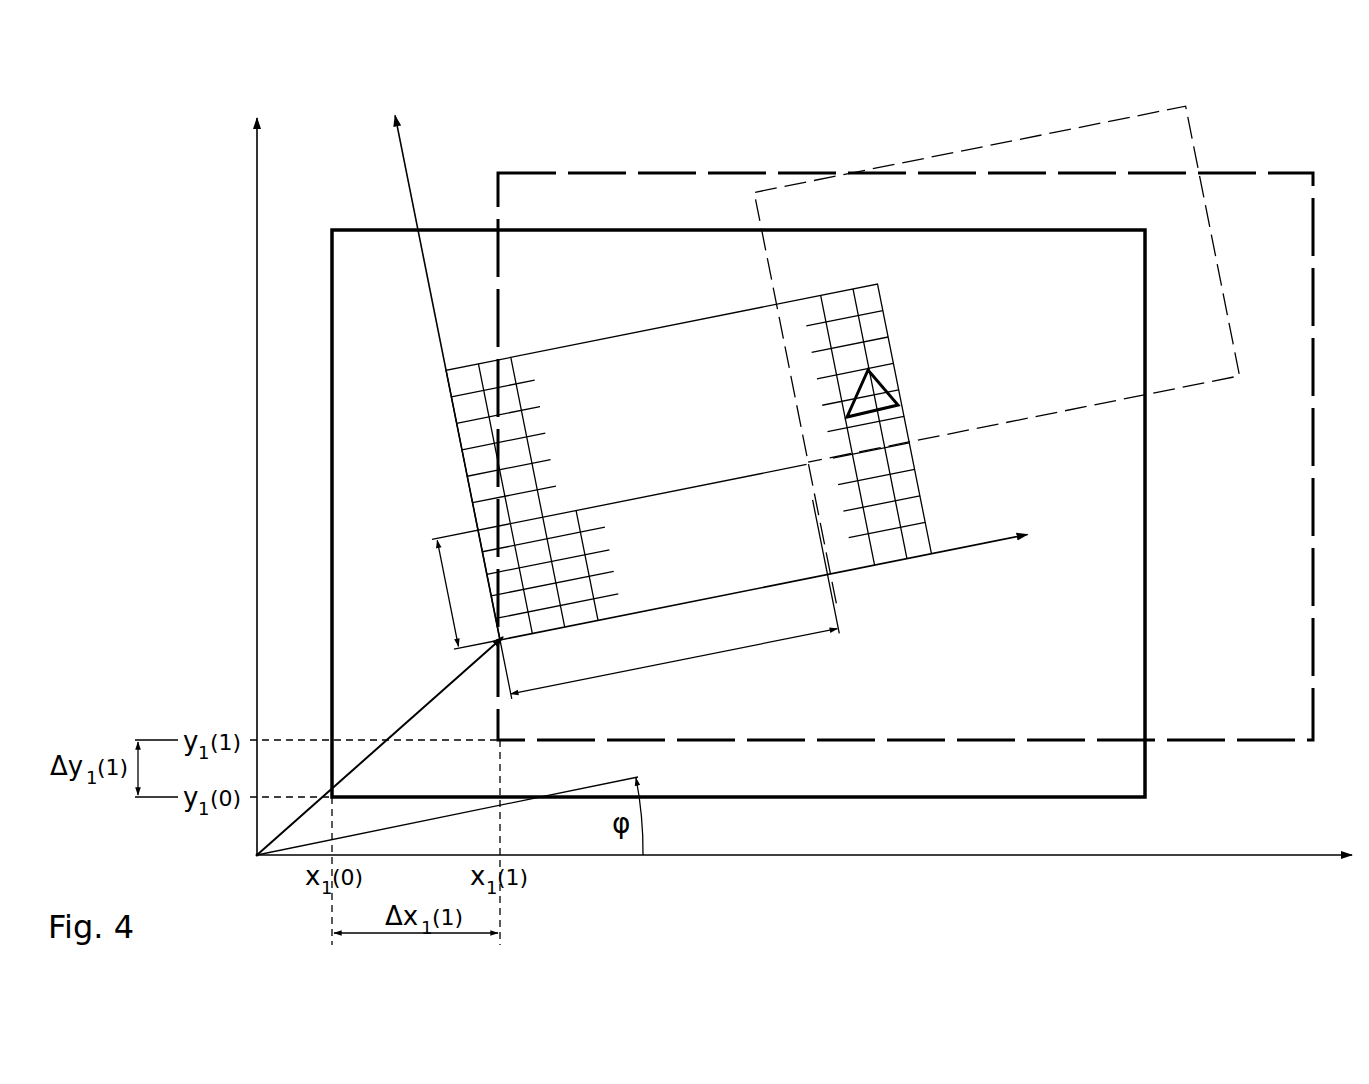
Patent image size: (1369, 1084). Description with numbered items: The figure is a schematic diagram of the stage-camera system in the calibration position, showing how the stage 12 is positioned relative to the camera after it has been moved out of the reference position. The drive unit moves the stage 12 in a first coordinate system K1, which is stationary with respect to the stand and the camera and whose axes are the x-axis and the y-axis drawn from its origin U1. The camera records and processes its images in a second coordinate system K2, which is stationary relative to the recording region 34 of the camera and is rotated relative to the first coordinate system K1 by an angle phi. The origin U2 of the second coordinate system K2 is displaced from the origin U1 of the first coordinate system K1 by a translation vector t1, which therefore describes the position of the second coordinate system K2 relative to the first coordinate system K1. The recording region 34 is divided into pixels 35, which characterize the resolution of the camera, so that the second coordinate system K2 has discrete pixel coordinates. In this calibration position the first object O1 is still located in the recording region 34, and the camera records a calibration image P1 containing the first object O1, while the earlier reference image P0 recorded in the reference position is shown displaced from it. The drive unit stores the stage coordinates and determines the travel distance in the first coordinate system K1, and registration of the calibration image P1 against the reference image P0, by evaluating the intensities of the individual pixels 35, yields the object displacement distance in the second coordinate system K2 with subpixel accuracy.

The stage 12 is at (633, 230).
The recording region 34 is at (832, 305).
The pixels 35 is at (462, 365).
The first coordinate system K1 is at (769, 498).
The second coordinate system K2 is at (676, 325).
The first object O1 is at (855, 244).
The reference image P0 is at (1011, 337).
The calibration image P1 is at (649, 389).
The origin of the first coordinate system U1 is at (221, 874).
The origin of the second coordinate system U2 is at (342, 642).
The translation vector t1 is at (343, 746).